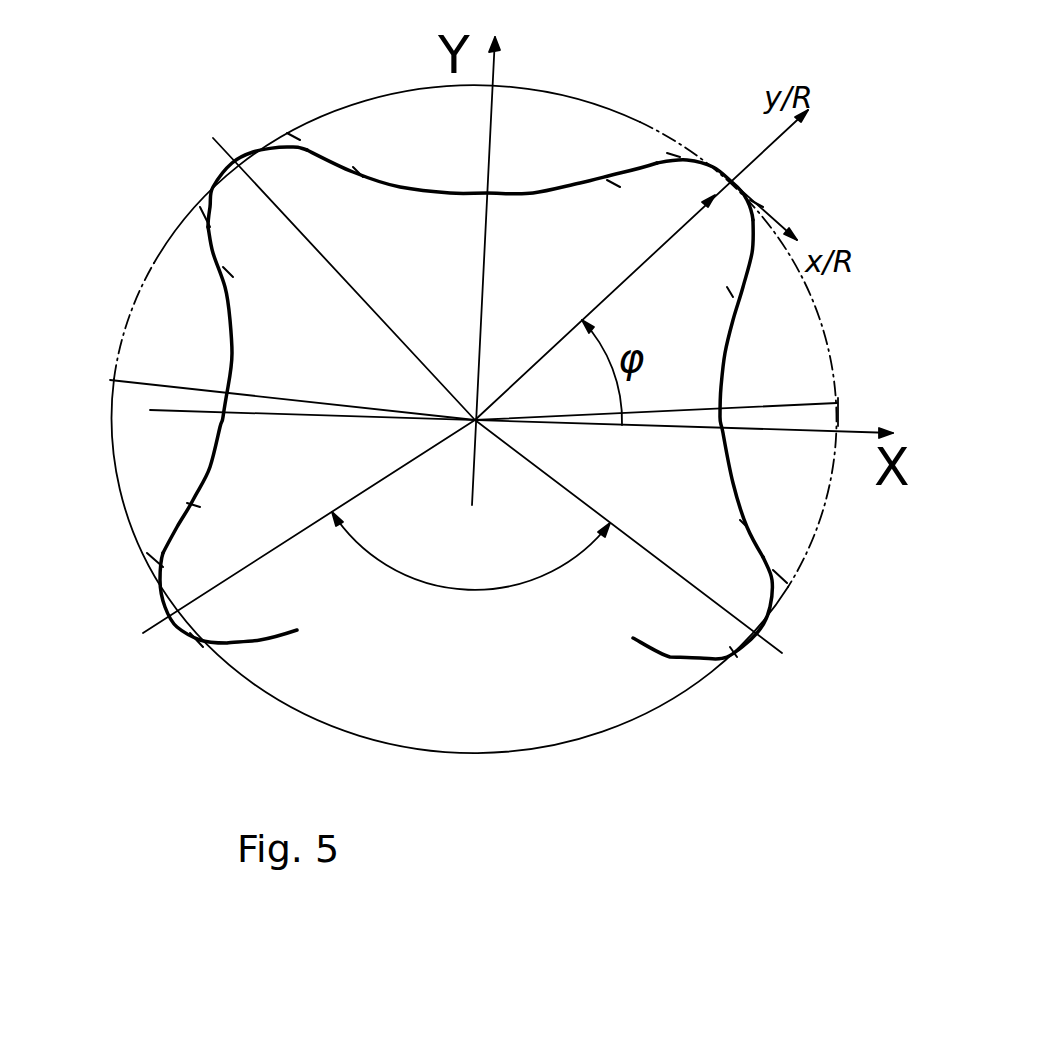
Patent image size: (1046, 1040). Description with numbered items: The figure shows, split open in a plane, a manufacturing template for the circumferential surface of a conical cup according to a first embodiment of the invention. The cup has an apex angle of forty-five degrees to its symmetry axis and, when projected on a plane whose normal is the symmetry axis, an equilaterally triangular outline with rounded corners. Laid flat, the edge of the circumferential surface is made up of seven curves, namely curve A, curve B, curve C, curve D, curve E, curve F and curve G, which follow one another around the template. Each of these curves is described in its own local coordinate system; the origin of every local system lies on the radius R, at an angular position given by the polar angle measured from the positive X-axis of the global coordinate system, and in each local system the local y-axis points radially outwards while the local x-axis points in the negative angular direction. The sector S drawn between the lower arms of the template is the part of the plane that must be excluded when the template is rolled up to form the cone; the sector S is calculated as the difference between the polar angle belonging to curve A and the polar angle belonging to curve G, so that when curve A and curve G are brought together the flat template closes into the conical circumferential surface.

The curve A is at (772, 613).
The curve B is at (725, 373).
The curve C is at (710, 165).
The curve D is at (507, 193).
The curve E is at (263, 147).
The curve F is at (228, 338).
The curve G is at (158, 597).
The radius R is at (641, 265).
The sector S is at (471, 551).